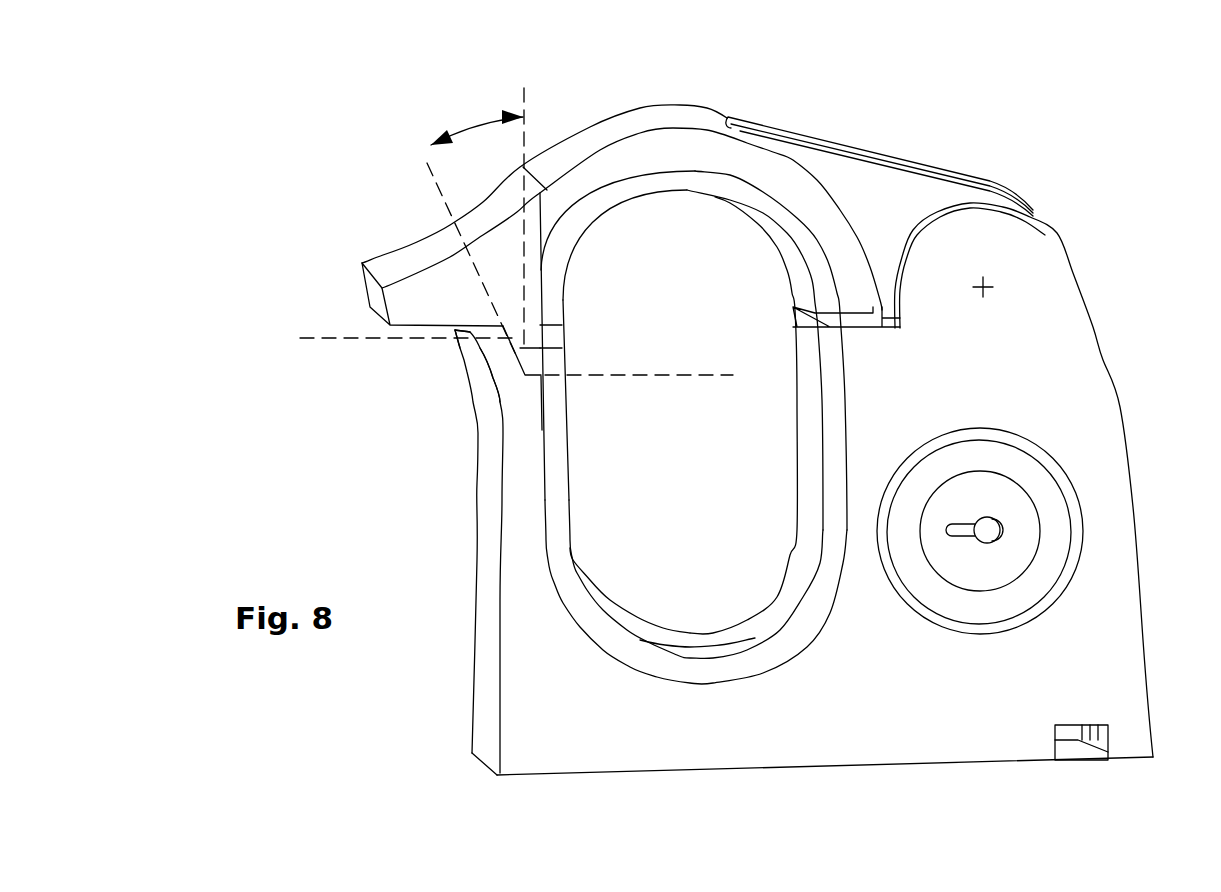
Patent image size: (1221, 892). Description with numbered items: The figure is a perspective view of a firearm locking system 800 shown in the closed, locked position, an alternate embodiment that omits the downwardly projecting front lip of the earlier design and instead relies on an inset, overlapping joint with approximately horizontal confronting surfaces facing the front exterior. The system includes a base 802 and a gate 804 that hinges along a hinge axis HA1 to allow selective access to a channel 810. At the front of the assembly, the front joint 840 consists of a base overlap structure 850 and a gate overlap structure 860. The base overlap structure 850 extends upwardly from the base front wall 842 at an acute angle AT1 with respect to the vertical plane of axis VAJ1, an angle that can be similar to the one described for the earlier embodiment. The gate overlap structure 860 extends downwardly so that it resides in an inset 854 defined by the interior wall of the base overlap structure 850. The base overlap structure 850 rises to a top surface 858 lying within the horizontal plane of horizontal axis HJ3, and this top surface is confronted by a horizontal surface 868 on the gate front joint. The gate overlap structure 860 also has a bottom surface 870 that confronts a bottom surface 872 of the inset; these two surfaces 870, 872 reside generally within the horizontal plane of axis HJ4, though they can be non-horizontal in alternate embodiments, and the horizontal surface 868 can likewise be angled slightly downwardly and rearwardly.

The locking system 800 is at (1095, 275).
The base 802 is at (1075, 418).
The gate 804 is at (870, 201).
The channel 810 is at (760, 563).
The front joint 840 is at (510, 370).
The base front wall 842 is at (517, 568).
The base overlap structure 850 is at (495, 366).
The inset 854 is at (536, 362).
The top surface 858 is at (486, 327).
The gate overlap structure 860 is at (518, 348).
The horizontal surface 868 is at (465, 325).
The bottom surface 870 is at (542, 372).
The bottom surface 872 is at (538, 374).
The hinge axis HA1 is at (988, 284).
The vertical axis VAJ1 is at (527, 95).
The acute angle AT1 is at (478, 114).
The horizontal axis HJ3 is at (317, 341).
The horizontal axis HJ4 is at (612, 377).